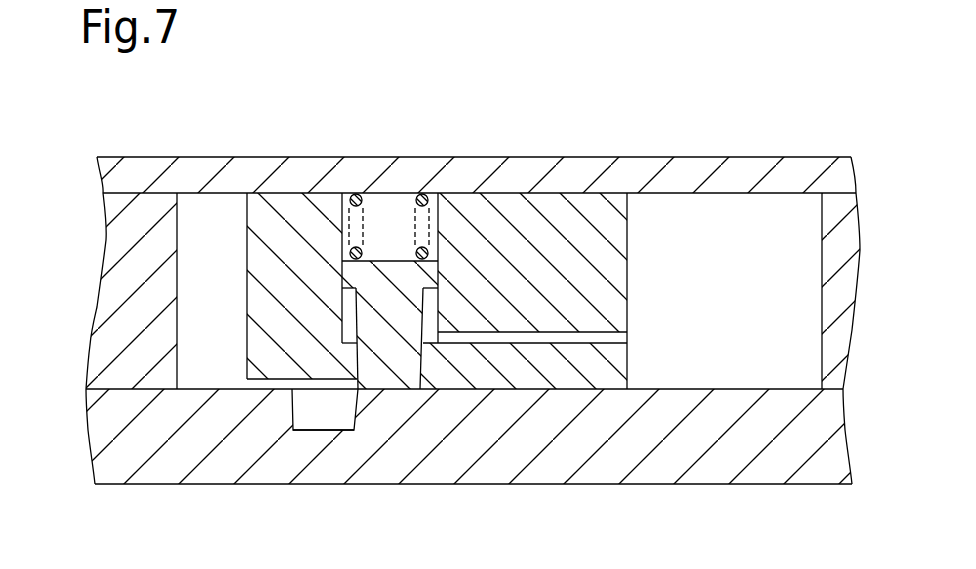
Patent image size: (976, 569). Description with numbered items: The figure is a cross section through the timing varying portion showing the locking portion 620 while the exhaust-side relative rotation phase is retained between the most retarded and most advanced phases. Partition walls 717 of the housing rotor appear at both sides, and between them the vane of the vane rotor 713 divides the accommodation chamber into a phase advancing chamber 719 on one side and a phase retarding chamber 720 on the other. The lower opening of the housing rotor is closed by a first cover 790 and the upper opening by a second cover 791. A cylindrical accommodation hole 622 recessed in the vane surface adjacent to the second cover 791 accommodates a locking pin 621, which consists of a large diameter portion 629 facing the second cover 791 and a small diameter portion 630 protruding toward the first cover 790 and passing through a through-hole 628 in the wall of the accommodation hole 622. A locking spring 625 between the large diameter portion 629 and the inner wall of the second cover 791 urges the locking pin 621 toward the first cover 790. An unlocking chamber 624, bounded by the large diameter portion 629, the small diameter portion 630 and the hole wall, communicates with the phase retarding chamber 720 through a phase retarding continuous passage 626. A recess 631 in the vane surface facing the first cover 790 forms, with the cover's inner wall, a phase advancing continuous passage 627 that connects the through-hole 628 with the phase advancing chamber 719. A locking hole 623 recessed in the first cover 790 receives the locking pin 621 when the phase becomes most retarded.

The locking portion 620 is at (615, 142).
The locking pin 621 is at (298, 103).
The accommodation hole 622 is at (356, 196).
The locking hole 623 is at (350, 418).
The unlocking chamber 624 is at (431, 316).
The locking spring 625 is at (430, 222).
The phase retarding continuous passage 626 is at (531, 337).
The phase advancing continuous passage 627 is at (327, 387).
The through-hole 628 is at (358, 364).
The large diameter portion 629 is at (340, 277).
The small diameter portion 630 is at (383, 323).
The recess 631 is at (290, 391).
The vane rotor 713 is at (620, 235).
The partition wall 717 is at (113, 253).
The phase advancing chamber 719 is at (210, 307).
The phase retarding chamber 720 is at (755, 362).
The first cover 790 is at (817, 487).
The second cover 791 is at (799, 157).